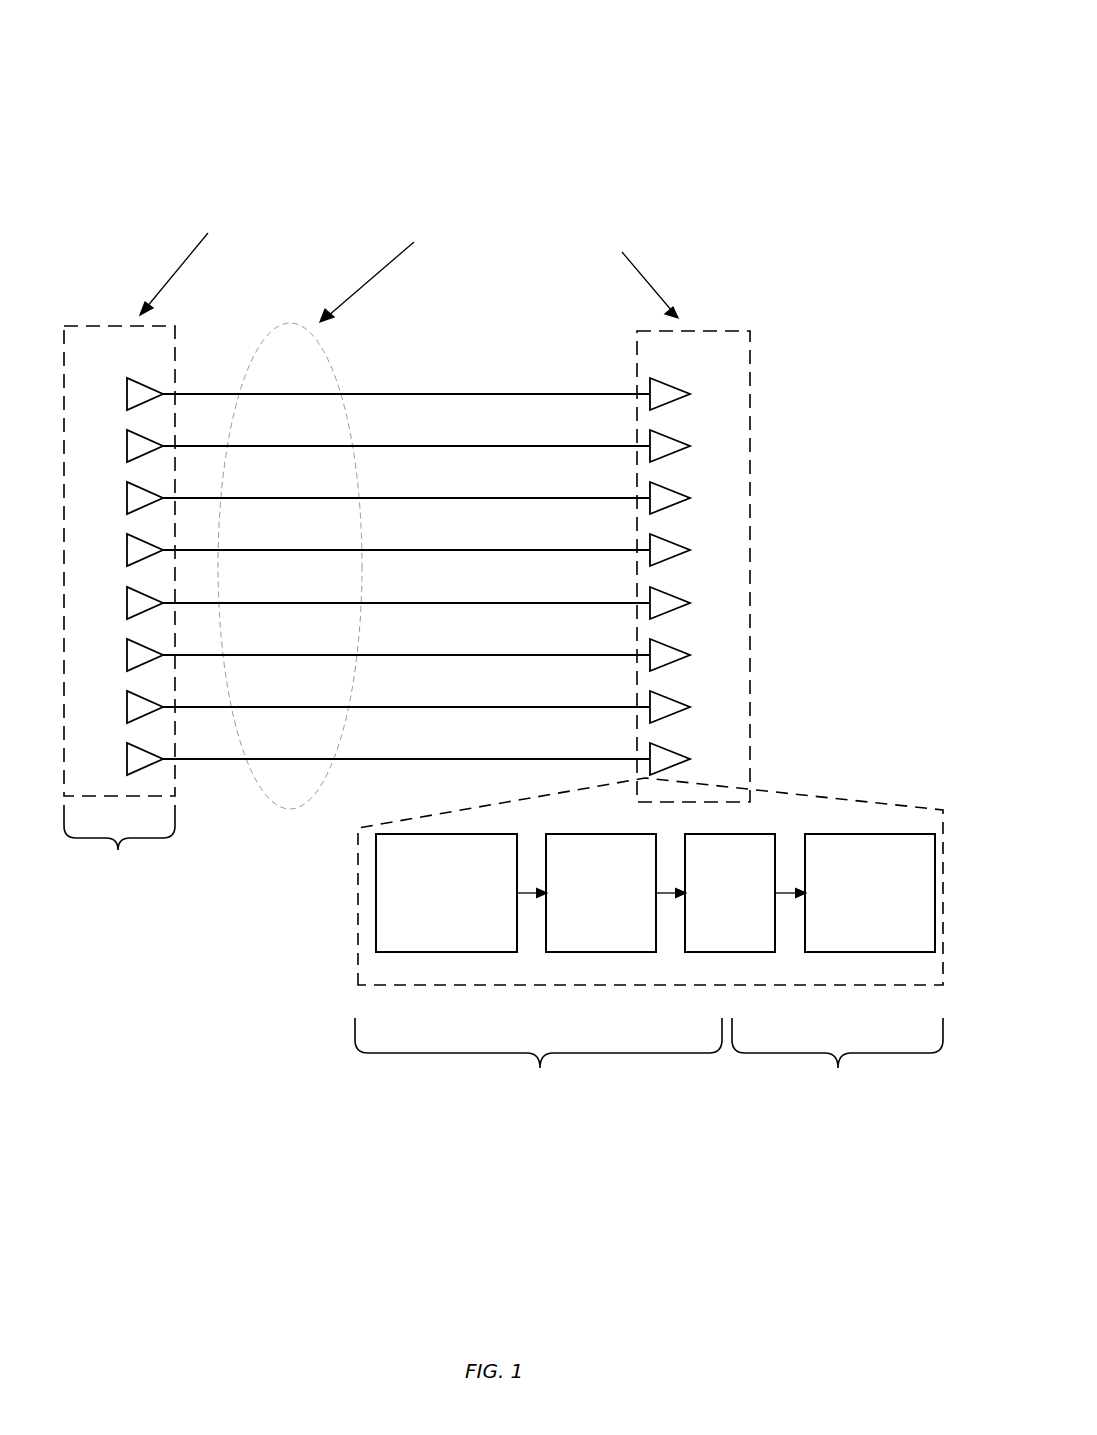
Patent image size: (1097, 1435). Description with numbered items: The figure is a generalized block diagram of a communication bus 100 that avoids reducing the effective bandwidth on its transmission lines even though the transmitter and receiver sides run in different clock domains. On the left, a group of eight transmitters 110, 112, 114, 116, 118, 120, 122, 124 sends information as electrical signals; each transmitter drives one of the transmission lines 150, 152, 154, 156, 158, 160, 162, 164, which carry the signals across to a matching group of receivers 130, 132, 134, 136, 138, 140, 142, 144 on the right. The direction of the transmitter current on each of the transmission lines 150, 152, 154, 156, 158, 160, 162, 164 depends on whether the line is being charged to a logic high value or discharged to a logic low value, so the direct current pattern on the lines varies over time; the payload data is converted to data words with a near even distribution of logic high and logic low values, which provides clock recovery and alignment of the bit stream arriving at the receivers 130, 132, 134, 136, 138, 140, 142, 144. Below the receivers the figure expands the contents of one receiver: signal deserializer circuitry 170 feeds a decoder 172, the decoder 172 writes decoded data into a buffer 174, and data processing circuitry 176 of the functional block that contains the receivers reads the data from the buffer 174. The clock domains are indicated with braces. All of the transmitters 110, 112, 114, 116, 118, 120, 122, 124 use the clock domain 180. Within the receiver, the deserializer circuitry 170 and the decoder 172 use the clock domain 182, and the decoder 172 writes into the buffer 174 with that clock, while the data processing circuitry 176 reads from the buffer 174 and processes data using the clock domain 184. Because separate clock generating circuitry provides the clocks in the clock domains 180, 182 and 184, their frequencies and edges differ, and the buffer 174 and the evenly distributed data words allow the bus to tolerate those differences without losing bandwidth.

The communication bus 100 is at (835, 62).
The transmitter 110 is at (136, 384).
The transmitter 112 is at (136, 436).
The transmitter 114 is at (136, 488).
The transmitter 116 is at (136, 540).
The transmitter 118 is at (136, 593).
The transmitter 120 is at (136, 645).
The transmitter 122 is at (136, 697).
The transmitter 124 is at (136, 749).
The receiver 130 is at (665, 385).
The receiver 132 is at (665, 437).
The receiver 134 is at (665, 489).
The receiver 136 is at (665, 541).
The receiver 138 is at (665, 594).
The receiver 140 is at (665, 646).
The receiver 142 is at (665, 698).
The receiver 144 is at (665, 750).
The transmission line 150 is at (263, 394).
The transmission line 152 is at (263, 446).
The transmission line 154 is at (263, 498).
The transmission line 156 is at (263, 550).
The transmission line 158 is at (263, 603).
The transmission line 160 is at (263, 655).
The transmission line 162 is at (263, 707).
The transmission line 164 is at (263, 759).
The deserializer circuitry 170 is at (466, 930).
The decoder 172 is at (582, 916).
The buffer 174 is at (711, 918).
The data processing circuitry 176 is at (851, 943).
The clock domain 180 is at (118, 850).
The clock domain 182 is at (540, 1068).
The clock domain 184 is at (838, 1068).